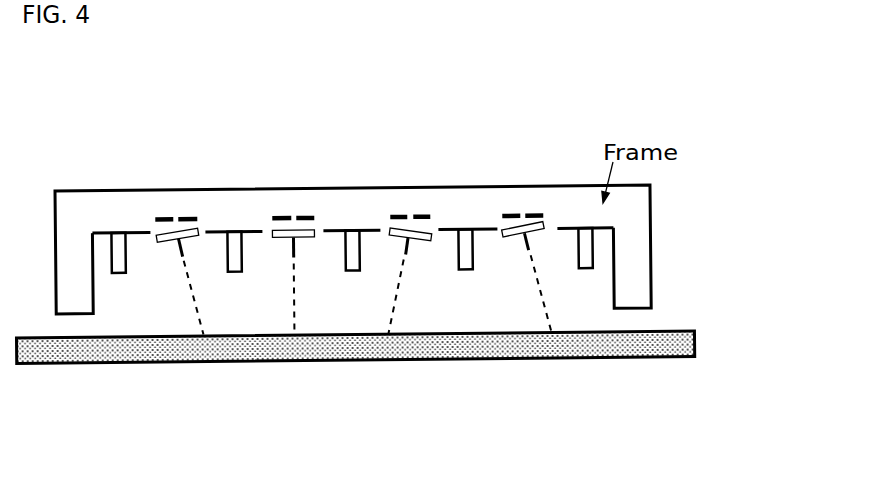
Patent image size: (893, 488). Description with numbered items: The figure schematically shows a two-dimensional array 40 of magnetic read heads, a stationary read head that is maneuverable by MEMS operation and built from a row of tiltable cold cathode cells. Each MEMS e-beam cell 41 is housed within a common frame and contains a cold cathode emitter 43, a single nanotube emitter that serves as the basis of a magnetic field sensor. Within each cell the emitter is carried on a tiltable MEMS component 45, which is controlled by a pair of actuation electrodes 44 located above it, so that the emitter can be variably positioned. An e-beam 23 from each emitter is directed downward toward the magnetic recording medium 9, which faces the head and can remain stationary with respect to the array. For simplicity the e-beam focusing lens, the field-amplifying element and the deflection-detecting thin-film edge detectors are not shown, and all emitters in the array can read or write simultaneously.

The two-dimensional array of magnetic read heads 40 is at (763, 200).
The MEMS cell 41 is at (158, 274).
The cold cathode emitter 43 is at (178, 248).
The actuation electrode 44 is at (310, 201).
The tiltable MEMS component 45 is at (409, 216).
The e-beam 23 is at (411, 286).
The magnetic recording medium 9 is at (412, 333).